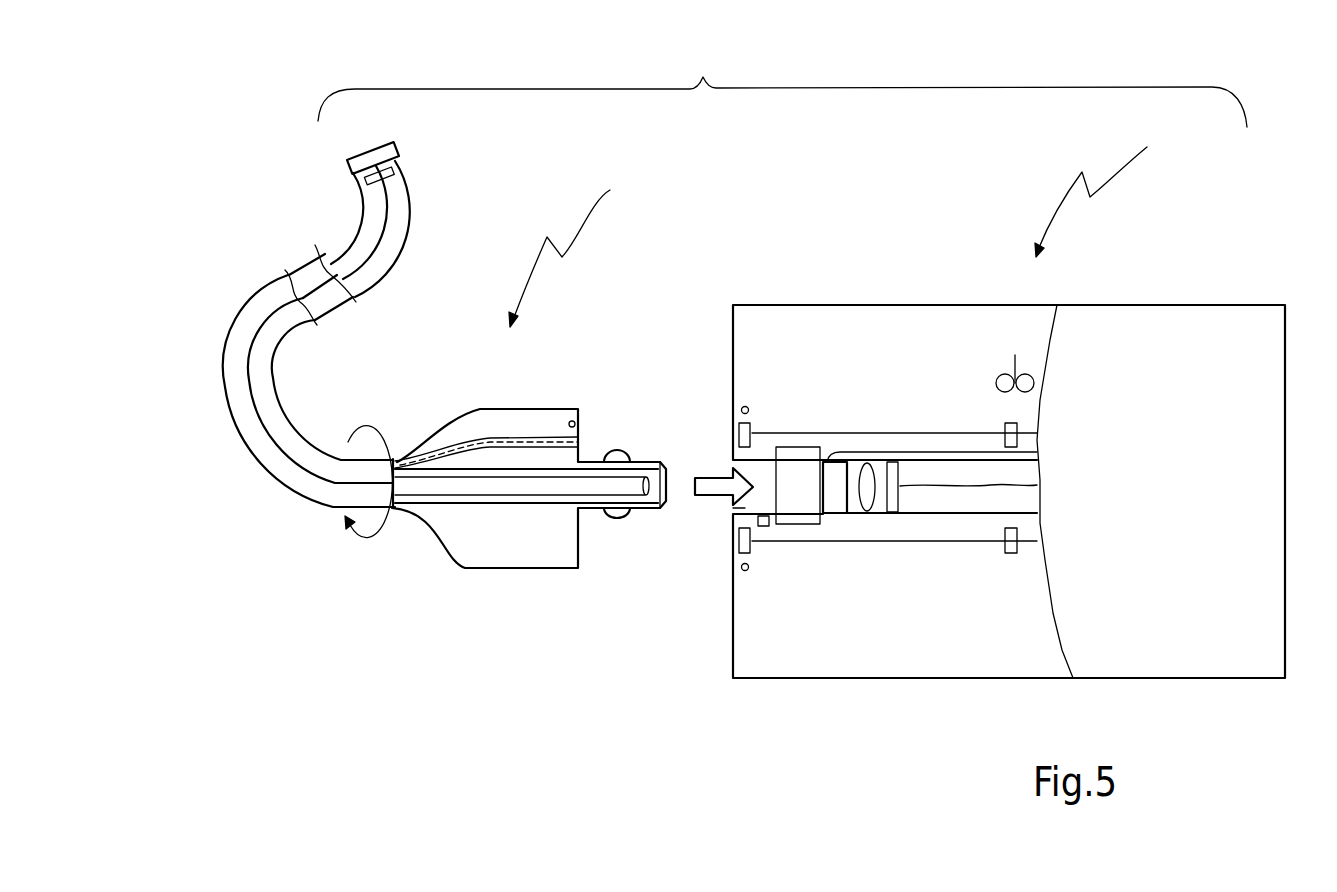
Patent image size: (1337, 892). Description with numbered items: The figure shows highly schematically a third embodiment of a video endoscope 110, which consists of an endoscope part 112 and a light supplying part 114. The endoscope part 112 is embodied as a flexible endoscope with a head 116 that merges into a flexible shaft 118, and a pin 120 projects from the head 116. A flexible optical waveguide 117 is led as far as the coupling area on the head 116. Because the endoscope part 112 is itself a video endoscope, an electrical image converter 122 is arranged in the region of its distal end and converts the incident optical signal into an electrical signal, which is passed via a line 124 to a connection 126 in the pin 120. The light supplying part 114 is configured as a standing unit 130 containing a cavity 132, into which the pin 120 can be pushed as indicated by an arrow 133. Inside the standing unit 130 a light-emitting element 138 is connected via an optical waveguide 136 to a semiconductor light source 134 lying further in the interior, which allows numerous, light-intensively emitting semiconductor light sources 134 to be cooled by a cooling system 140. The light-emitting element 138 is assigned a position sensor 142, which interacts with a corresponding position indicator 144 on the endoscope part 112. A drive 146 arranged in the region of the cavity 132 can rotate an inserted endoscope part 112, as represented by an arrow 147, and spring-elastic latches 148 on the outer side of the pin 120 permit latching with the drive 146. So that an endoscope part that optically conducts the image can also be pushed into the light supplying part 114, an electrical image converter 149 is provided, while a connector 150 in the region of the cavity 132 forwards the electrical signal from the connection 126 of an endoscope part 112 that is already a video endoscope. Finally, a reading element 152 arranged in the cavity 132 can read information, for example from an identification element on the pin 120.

The video endoscope 110 is at (782, 87).
The endoscope part 112 is at (577, 247).
The light supplying part 114 is at (1109, 191).
The head 116 is at (517, 418).
The flexible optical waveguide 117 is at (468, 442).
The flexible shaft 118 is at (273, 327).
The pin 120 is at (640, 461).
The electrical image converter 122 is at (393, 175).
The line 124 is at (385, 225).
The connection 126 is at (651, 481).
The standing unit 130 is at (1192, 304).
The cavity 132 is at (744, 501).
The arrow 133 is at (713, 488).
The semiconductor light source 134 is at (1007, 424).
The optical waveguide 136 is at (913, 433).
The light-emitting element 138 is at (750, 430).
The cooling system 140 is at (1000, 372).
The position sensor 142 is at (747, 408).
The position indicator 144 is at (576, 421).
The drive 146 is at (798, 445).
The arrow 147 is at (385, 530).
The spring-elastic latches 148 is at (613, 517).
The electrical image converter 149 is at (893, 500).
The connector 150 is at (838, 492).
The reading element 152 is at (769, 527).